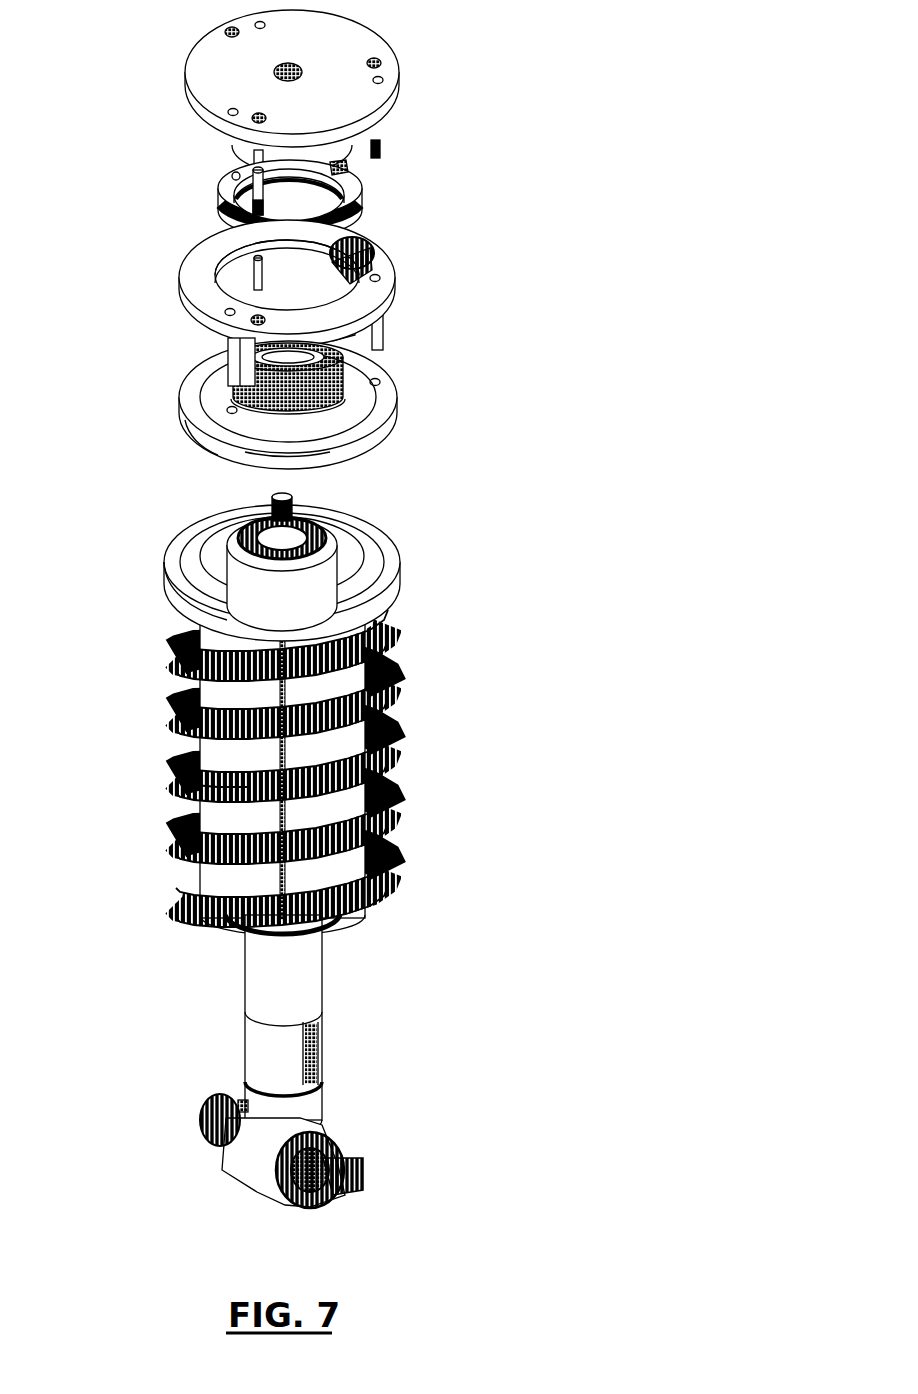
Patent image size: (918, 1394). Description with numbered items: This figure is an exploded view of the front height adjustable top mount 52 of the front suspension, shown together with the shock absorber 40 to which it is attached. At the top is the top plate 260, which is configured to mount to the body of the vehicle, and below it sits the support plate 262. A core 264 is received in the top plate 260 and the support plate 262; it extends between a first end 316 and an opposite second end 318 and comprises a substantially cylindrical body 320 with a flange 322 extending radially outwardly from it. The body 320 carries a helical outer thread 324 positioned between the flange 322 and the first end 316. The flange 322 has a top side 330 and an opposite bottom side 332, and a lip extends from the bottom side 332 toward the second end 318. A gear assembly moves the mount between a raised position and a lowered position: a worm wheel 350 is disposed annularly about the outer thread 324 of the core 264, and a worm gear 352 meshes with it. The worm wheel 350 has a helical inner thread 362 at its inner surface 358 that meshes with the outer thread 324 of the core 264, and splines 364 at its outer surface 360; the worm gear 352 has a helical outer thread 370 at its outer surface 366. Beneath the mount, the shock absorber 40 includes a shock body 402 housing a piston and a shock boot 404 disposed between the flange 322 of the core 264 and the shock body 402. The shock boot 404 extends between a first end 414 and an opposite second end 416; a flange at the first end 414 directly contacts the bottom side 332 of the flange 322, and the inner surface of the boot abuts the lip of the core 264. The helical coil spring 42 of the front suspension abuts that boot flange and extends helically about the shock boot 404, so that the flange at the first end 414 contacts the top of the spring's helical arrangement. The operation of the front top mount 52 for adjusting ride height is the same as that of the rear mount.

The shock absorber 40 is at (274, 850).
The helical coil spring 42 is at (288, 867).
The front height adjustable top mount 52 is at (363, 604).
The top plate 260 is at (325, 37).
The support plate 262 is at (351, 272).
The core 264 is at (334, 413).
The first end 316 is at (262, 358).
The second end 318 is at (250, 468).
The body 320 is at (295, 465).
The flange 322 is at (378, 419).
The outer thread 324 is at (340, 372).
The top side 330 is at (196, 372).
The bottom side 332 is at (220, 452).
The worm wheel 350 is at (292, 186).
The worm gear 352 is at (372, 251).
The inner surface 358 is at (238, 170).
The outer surface 360 is at (225, 207).
The inner thread 362 is at (336, 160).
The splines 364 is at (356, 201).
The outer surface 366 is at (346, 271).
The outer thread 370 is at (360, 243).
The shock body 402 is at (300, 992).
The shock boot 404 is at (274, 567).
The first end 414 is at (185, 560).
The second end 416 is at (237, 757).